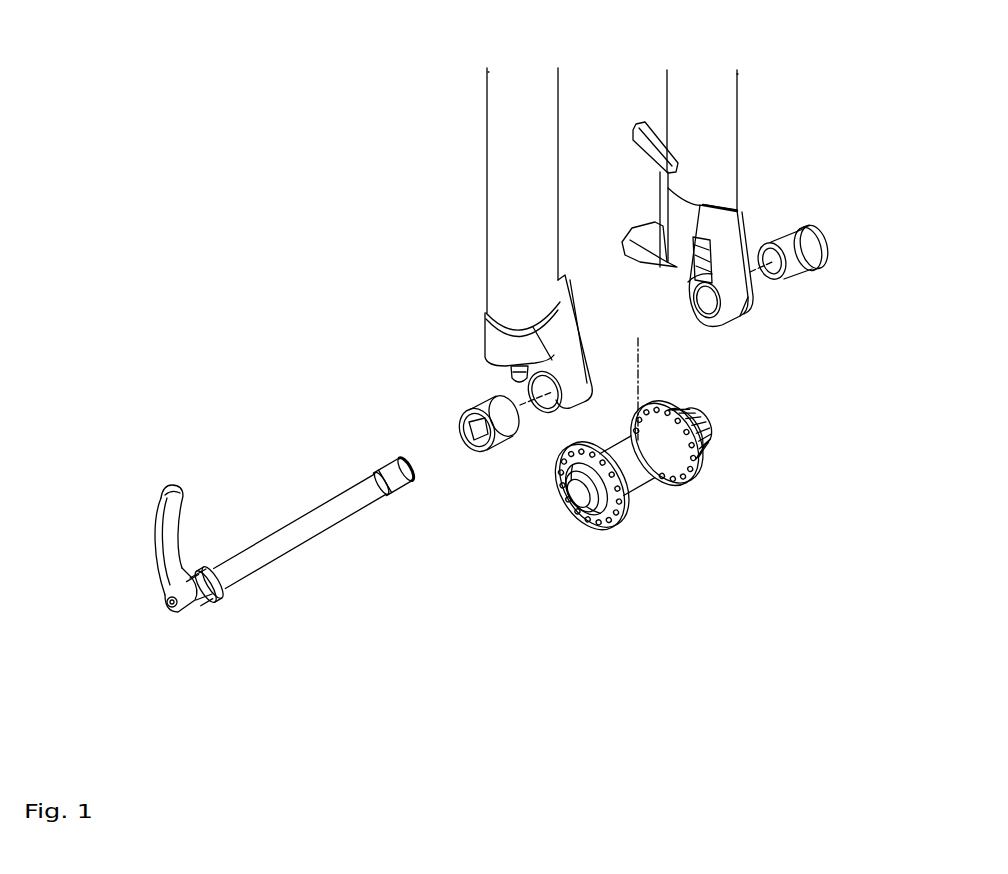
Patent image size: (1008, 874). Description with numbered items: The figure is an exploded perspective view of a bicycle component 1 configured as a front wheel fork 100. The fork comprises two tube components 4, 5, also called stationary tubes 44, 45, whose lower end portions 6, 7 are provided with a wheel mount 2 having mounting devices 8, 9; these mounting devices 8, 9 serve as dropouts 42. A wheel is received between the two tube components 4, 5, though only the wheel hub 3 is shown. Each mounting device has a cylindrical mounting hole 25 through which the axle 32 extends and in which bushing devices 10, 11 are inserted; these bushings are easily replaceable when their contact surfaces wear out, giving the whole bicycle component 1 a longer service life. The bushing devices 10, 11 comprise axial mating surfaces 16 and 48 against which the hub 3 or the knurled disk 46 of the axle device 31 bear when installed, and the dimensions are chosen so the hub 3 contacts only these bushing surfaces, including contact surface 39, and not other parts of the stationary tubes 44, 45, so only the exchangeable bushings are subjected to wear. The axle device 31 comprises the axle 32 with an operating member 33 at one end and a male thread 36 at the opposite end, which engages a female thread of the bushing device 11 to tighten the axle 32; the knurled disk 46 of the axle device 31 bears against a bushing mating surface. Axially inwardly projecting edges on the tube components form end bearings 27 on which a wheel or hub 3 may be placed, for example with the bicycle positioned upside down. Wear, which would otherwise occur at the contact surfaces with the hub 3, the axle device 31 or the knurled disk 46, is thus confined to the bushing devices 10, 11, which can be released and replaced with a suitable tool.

The front wheel fork 100 is at (243, 140).
The bicycle component 1 is at (308, 113).
The wheel mount 2 is at (420, 238).
The wheel hub 3 is at (650, 493).
The tube component 4 is at (500, 128).
The tube component 5 is at (728, 116).
The end portion 6 is at (452, 348).
The end portion 7 is at (765, 208).
The mounting device 8 is at (432, 311).
The mounting device 9 is at (770, 325).
The bushing device 10 is at (488, 450).
The bushing device 11 is at (830, 262).
The axial mating surface 16 is at (778, 277).
The cylindrical mounting hole 25 is at (550, 398).
The end bearing 27 is at (682, 283).
The axle device 31 is at (195, 465).
The axle 32 is at (312, 533).
The operating member 33 is at (143, 528).
The male thread 36 is at (392, 470).
The contact surface 39 is at (575, 513).
The dropout 42 is at (740, 340).
The stationary tube 44 is at (500, 82).
The stationary tube 45 is at (727, 70).
The knurled disk 46 is at (218, 600).
The axial mating surface 48 is at (462, 413).